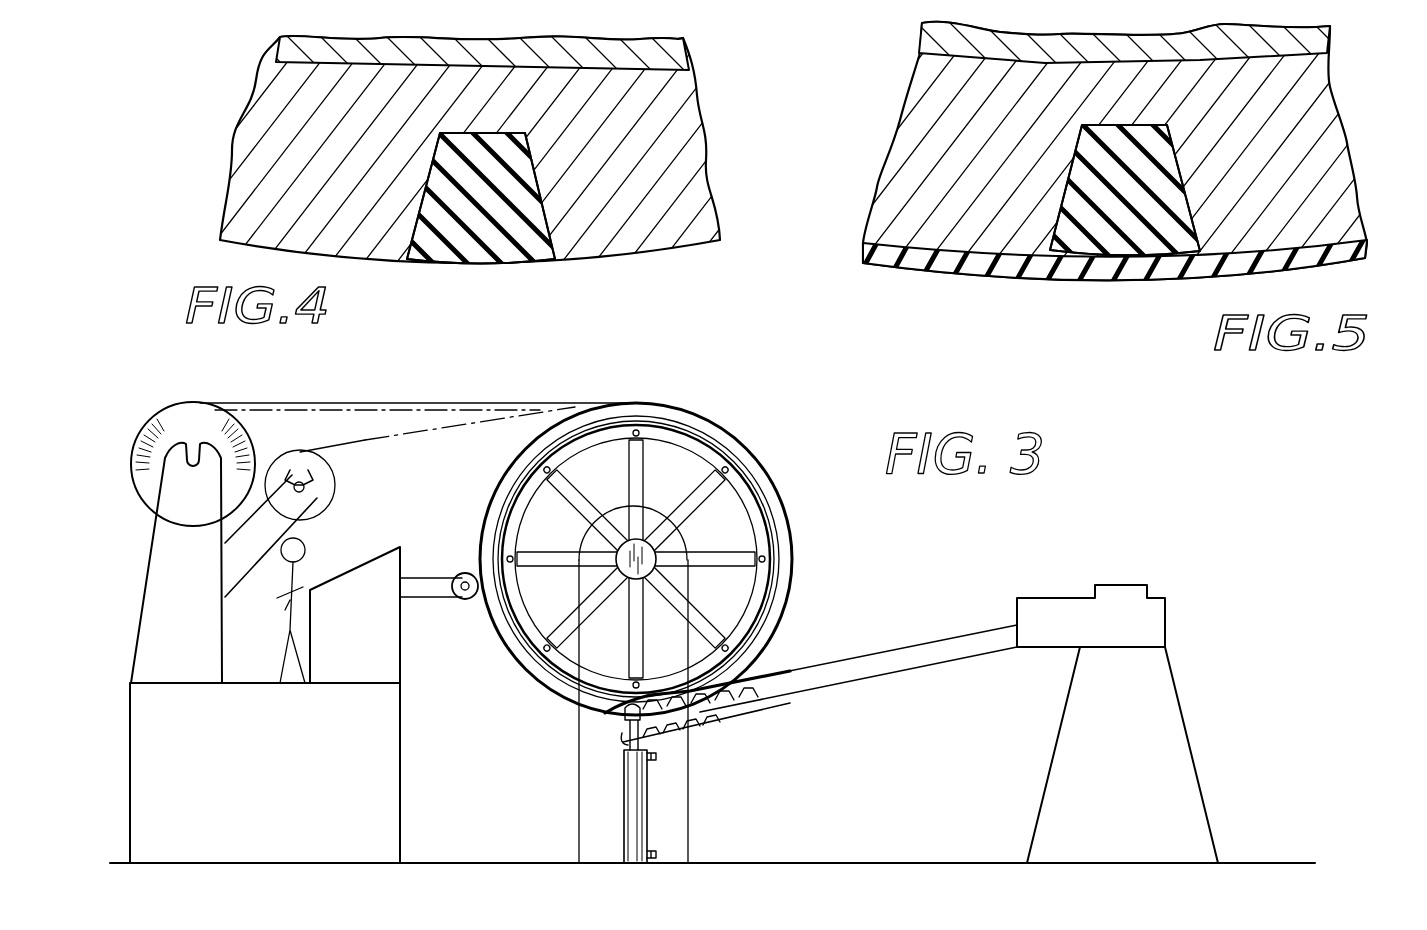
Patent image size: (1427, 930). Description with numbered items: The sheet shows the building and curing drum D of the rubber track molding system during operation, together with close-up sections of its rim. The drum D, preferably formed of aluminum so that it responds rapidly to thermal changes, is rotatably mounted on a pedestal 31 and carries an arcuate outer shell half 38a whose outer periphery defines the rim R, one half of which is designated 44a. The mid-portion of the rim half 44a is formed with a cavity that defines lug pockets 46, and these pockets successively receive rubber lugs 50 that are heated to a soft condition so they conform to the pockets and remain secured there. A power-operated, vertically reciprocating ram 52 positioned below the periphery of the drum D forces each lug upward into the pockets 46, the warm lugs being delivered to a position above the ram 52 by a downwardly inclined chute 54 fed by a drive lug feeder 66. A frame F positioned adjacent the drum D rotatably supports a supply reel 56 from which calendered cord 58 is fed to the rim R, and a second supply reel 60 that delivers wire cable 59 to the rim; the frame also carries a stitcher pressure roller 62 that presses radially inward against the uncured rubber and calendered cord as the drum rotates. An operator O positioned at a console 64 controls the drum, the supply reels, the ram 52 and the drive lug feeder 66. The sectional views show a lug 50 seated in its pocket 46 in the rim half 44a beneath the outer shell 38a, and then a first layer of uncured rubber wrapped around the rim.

In FIG. 3, the pedestal 31 is at (583, 828).
In FIG. 4, the arcuate outer shell half 38a is at (670, 42).
In FIG. 5, the arcuate outer shell half 38a is at (1101, 42).
In FIG. 4, the rim half 44a is at (690, 137).
In FIG. 5, the rim half 44a is at (1320, 88).
In FIG. 4, the lug pockets 46 is at (537, 250).
In FIG. 5, the lug pockets 46 is at (1187, 240).
In FIG. 3, the lug pockets 46 is at (673, 707).
In FIG. 4, the rubber lugs 50 is at (477, 249).
In FIG. 5, the rubber lugs 50 is at (1120, 248).
In FIG. 3, the rubber lugs 50 is at (673, 723).
In FIG. 3, the ram 52 is at (637, 803).
In FIG. 3, the chute 54 is at (867, 677).
In FIG. 3, the supply reel 56 is at (340, 495).
In FIG. 3, the calendered cord 58 is at (400, 437).
In FIG. 3, the wire cable 59 is at (343, 403).
In FIG. 3, the second supply reel 60 is at (248, 432).
In FIG. 3, the stitcher pressure roller 62 is at (473, 567).
In FIG. 5, the console 64 is at (1360, 247).
In FIG. 3, the console 64 is at (265, 773).
In FIG. 3, the drive lug feeder 66 is at (1117, 724).
In FIG. 3, the rim R is at (707, 418).
In FIG. 3, the building and curing drum D is at (572, 672).
In FIG. 3, the frame F is at (176, 563).
In FIG. 3, the operator O is at (287, 610).